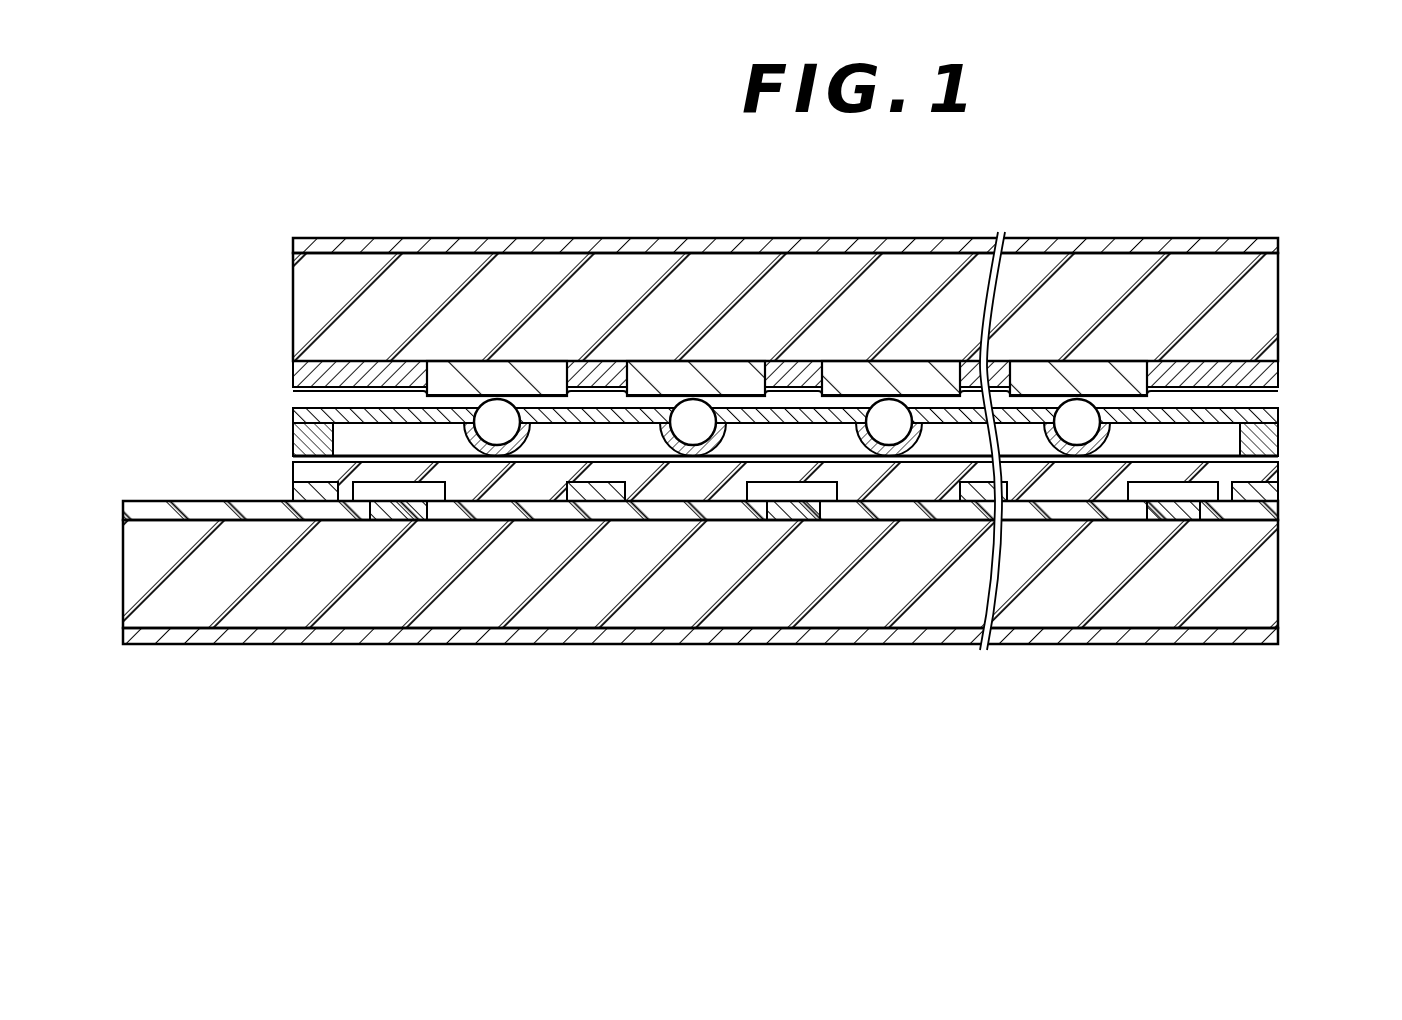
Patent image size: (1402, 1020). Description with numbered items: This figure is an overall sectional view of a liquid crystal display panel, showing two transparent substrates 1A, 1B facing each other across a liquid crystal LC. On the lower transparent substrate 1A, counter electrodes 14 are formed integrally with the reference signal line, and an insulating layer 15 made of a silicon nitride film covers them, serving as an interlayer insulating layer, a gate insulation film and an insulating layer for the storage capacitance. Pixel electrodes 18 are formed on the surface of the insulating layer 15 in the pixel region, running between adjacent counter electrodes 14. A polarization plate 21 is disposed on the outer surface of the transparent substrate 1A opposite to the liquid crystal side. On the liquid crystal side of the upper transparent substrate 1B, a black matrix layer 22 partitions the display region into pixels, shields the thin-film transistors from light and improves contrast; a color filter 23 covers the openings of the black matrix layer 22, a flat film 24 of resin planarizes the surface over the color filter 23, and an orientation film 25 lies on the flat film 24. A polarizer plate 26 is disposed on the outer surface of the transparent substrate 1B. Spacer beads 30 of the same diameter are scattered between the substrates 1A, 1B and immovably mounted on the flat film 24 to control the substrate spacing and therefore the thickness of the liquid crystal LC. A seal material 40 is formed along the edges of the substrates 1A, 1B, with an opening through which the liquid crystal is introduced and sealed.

The transparent substrate 1A is at (180, 610).
The transparent substrate 1B is at (318, 299).
The counter electrode 14 is at (397, 513).
The insulating layer 15 is at (152, 508).
The pixel electrode 18 is at (600, 487).
The polarization plate 21 is at (1180, 645).
The black matrix layer 22 is at (1263, 375).
The color filter 23 is at (1037, 377).
The flat film 24 is at (303, 398).
The orientation film 25 is at (303, 416).
The polarizer plate 26 is at (1152, 248).
The spacer bead 30 is at (497, 418).
The seal material 40 is at (300, 440).
The liquid crystal LC is at (1218, 440).